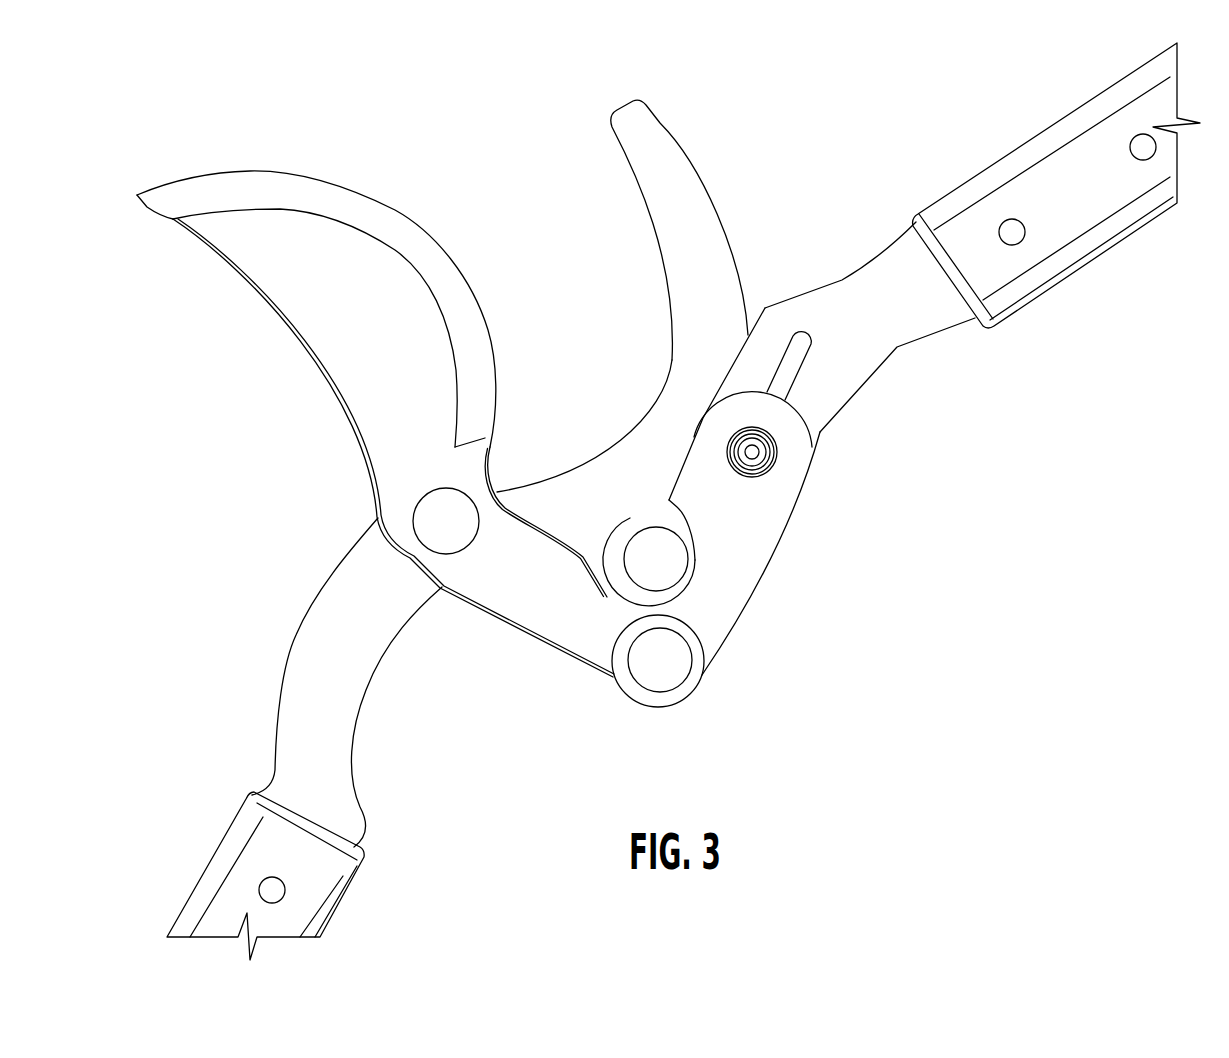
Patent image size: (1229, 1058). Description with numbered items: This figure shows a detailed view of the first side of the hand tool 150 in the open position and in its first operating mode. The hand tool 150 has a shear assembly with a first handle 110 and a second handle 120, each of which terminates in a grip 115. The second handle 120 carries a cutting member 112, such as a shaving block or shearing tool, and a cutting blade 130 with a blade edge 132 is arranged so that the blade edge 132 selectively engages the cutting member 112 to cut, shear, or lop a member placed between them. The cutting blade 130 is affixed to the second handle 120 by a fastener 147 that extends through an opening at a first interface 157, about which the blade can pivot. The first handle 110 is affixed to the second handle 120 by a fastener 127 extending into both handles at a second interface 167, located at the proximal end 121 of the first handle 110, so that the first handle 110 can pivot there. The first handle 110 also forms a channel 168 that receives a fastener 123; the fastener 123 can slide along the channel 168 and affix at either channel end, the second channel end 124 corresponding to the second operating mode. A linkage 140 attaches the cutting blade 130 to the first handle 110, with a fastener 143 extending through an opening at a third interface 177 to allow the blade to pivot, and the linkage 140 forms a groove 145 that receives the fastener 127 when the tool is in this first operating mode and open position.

The first handle 110 is at (880, 288).
The cutting member 112 is at (672, 176).
The handle grip 115 is at (313, 867).
The second handle 120 is at (303, 748).
The proximal end 121 is at (605, 606).
The fastener 123 is at (789, 460).
The second channel end 124 is at (805, 314).
The fastener 127 is at (652, 563).
The cutting blade 130 is at (333, 338).
The blade edge 132 is at (395, 198).
The linkage 140 is at (727, 593).
The fastener 143 is at (653, 670).
The groove 145 is at (684, 548).
The fastener 147 is at (440, 531).
The hand tool 150 is at (567, 106).
The first interface 157 is at (469, 562).
The second interface 167 is at (605, 548).
The channel 168 is at (810, 378).
The third interface 177 is at (700, 689).